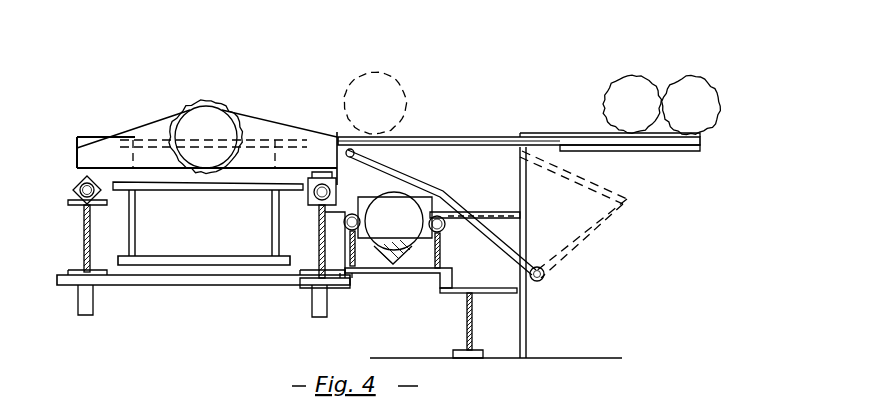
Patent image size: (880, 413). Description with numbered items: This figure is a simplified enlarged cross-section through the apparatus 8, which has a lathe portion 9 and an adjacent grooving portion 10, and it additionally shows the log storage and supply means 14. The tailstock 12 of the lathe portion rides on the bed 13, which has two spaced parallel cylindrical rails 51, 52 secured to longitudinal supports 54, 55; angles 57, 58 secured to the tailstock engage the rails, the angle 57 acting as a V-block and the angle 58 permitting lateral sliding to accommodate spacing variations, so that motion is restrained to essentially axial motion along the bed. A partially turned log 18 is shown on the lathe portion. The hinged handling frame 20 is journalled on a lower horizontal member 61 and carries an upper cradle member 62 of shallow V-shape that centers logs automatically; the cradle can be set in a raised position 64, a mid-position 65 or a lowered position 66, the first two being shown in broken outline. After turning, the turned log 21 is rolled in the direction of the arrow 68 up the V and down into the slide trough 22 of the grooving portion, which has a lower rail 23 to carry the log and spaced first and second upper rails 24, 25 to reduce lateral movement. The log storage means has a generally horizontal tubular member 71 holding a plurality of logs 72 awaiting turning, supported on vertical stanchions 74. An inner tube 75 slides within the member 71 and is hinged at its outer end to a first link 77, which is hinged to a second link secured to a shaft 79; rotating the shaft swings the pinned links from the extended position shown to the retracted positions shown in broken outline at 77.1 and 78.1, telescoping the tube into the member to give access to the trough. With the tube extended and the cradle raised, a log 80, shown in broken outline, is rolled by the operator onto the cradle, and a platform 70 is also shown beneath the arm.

The apparatus 8 is at (316, 64).
The lathe portion 9 is at (193, 58).
The grooving portion 10 is at (394, 300).
The tailstock 12 is at (150, 122).
The bed 13 is at (76, 172).
The log storage and supply means 14 is at (576, 128).
The partially turned log 18 is at (214, 121).
The handling frame 20 is at (152, 196).
The turned log 21 is at (386, 204).
The slide trough 22 is at (438, 190).
The lower rail 23 is at (382, 272).
The first upper rail 24 is at (362, 222).
The second upper rail 25 is at (446, 228).
The cylindrical rail 51 is at (76, 196).
The cylindrical rail 52 is at (308, 198).
The longitudinal support 54 is at (82, 254).
The longitudinal support 55 is at (318, 250).
The angle 57 is at (76, 186).
The angle 58 is at (312, 206).
The lower horizontal member 61 is at (204, 258).
The upper cradle member 62 is at (214, 192).
The raised position 64 is at (124, 128).
The mid-position 65 is at (118, 164).
The lowered position 66 is at (126, 190).
The arrow 68 is at (250, 78).
The platform 70 is at (480, 212).
The horizontal tubular member 71 is at (670, 152).
The logs 72 is at (669, 78).
The vertical stanchions 74 is at (527, 204).
The inner tube 75 is at (458, 120).
The first link 77 is at (432, 160).
The retracted position of first link 77.1 is at (558, 164).
The retracted position of second link 78.1 is at (592, 226).
The shaft 79 is at (545, 276).
The log 80 is at (390, 56).